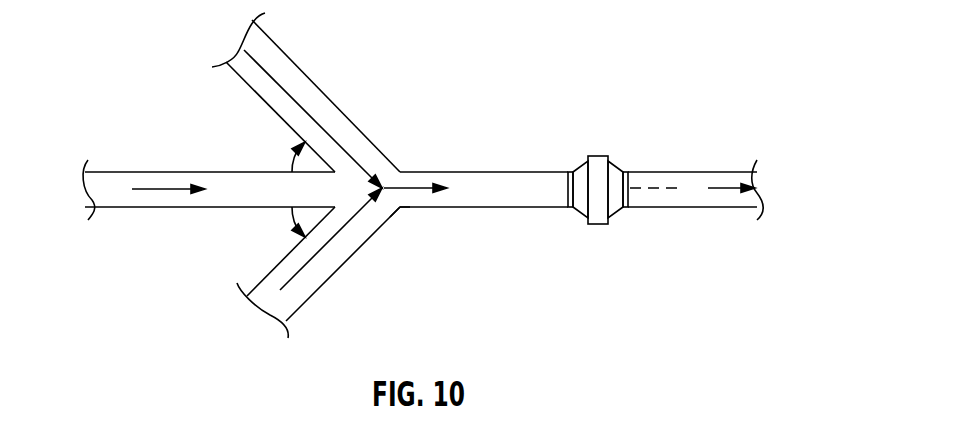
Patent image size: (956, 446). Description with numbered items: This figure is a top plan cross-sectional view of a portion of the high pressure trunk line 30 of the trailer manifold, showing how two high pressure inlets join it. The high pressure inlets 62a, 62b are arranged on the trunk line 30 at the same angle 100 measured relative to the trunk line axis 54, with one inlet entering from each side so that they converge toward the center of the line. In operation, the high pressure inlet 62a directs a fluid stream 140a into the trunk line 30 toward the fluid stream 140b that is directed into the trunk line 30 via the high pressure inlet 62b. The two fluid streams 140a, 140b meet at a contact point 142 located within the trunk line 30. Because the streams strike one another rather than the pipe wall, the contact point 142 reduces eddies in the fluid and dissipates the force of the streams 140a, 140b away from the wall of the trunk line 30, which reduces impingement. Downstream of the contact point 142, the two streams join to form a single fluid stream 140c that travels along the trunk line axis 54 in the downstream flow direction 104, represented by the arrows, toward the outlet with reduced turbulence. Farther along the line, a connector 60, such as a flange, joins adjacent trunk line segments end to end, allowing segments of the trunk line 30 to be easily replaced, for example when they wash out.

The downstream direction 104 is at (152, 187).
The angle 100 is at (293, 161).
The high pressure inlet 62a is at (309, 79).
The high pressure inlet 62b is at (362, 246).
The fluid stream 140a is at (281, 87).
The fluid stream 140b is at (287, 286).
The fluid stream 140c is at (422, 186).
The contact point 142 is at (398, 208).
The high pressure trunk line 30 is at (513, 160).
The connector 60 is at (598, 155).
The trunk line axis 54 is at (642, 187).